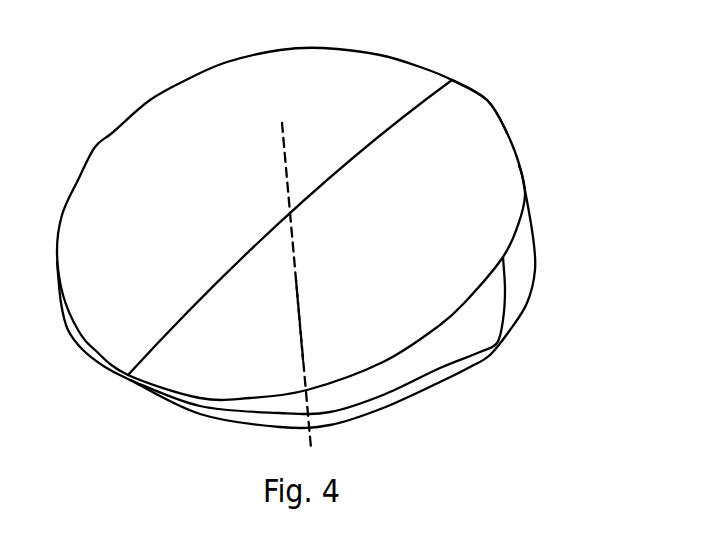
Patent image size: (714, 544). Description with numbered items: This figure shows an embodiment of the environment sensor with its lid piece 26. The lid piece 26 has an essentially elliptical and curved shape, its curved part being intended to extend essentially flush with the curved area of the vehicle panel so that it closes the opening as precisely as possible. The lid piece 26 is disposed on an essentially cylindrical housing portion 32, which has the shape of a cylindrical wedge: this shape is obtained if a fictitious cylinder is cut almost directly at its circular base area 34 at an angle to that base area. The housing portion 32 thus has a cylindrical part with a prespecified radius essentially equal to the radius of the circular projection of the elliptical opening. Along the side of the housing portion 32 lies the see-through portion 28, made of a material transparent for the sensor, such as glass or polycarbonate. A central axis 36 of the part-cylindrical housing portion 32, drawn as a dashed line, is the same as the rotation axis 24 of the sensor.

The lid piece 26 is at (167, 137).
The rotation axis 24 is at (288, 173).
The housing portion 32 is at (503, 85).
The central axis 36 is at (300, 317).
The see-through portion 28 is at (522, 262).
The base area 34 is at (470, 367).